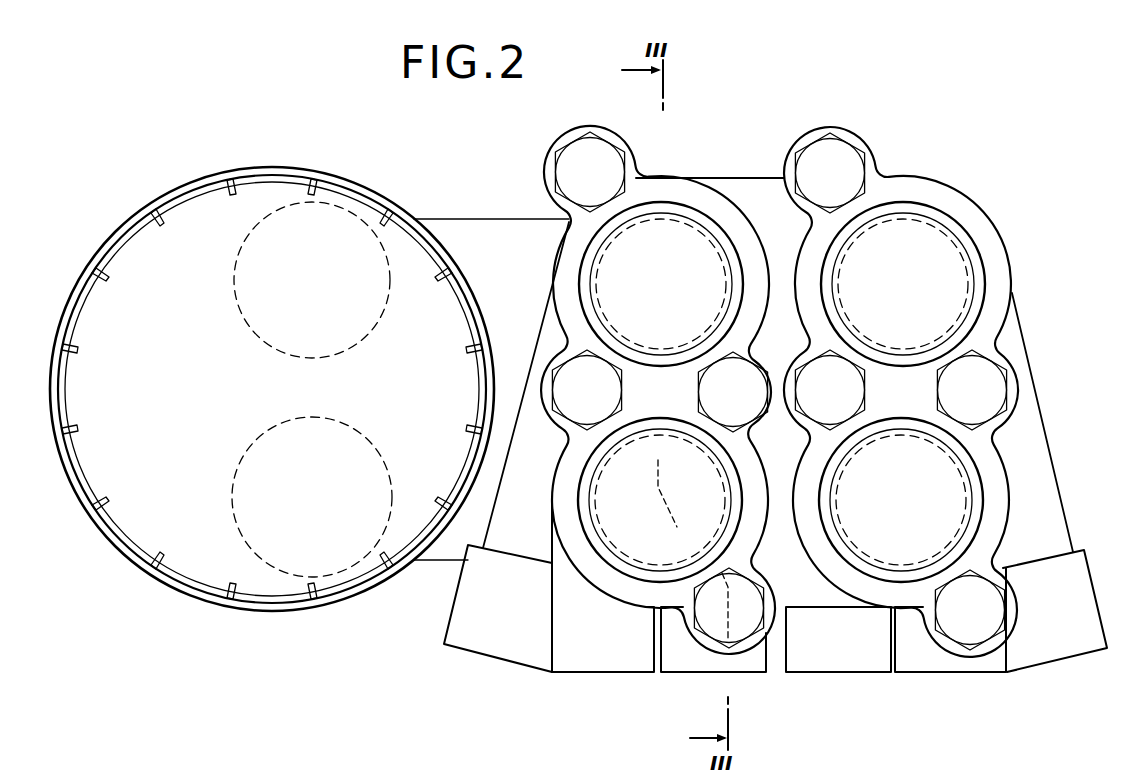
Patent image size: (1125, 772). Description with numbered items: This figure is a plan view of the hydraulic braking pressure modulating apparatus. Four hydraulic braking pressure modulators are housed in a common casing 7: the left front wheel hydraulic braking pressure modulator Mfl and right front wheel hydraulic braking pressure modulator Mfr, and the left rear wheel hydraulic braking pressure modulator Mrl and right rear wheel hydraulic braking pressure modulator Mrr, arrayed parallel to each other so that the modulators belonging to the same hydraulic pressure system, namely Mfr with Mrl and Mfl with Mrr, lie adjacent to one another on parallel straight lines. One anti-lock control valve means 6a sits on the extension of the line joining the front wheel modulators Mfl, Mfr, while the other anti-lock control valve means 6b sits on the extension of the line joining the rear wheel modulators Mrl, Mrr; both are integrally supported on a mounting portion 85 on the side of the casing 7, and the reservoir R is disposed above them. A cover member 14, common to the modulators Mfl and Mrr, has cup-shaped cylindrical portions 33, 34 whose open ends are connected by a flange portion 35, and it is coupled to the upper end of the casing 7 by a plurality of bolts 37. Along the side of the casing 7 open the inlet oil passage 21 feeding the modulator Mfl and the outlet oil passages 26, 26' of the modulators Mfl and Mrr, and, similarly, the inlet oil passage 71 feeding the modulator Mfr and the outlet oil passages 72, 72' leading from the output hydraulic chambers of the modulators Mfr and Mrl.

The reservoir R is at (198, 182).
The anti-lock control valve means 6a is at (258, 437).
The anti-lock control valve means 6b is at (258, 338).
The mounting portion 85 is at (468, 218).
The cover member 14 is at (782, 383).
The casing 7 is at (763, 178).
The bolt 37 is at (577, 150).
The cup-shaped cylindrical portion 34 is at (580, 278).
The flange portion 35 is at (563, 458).
The cup-shaped cylindrical portion 33 is at (597, 553).
The right rear wheel hydraulic braking pressure modulator Mrr is at (629, 253).
The left rear wheel hydraulic braking pressure modulator Mrl is at (934, 196).
The left front wheel hydraulic braking pressure modulator Mfl is at (650, 533).
The right front wheel hydraulic braking pressure modulator Mfr is at (994, 530).
The outlet oil passage 26 is at (603, 604).
The outlet oil passage 26' is at (498, 624).
The inlet oil passage 21 is at (693, 673).
The inlet oil passage 71 is at (832, 673).
The outlet oil passage 72 is at (950, 639).
The outlet oil passage 72' is at (1055, 626).